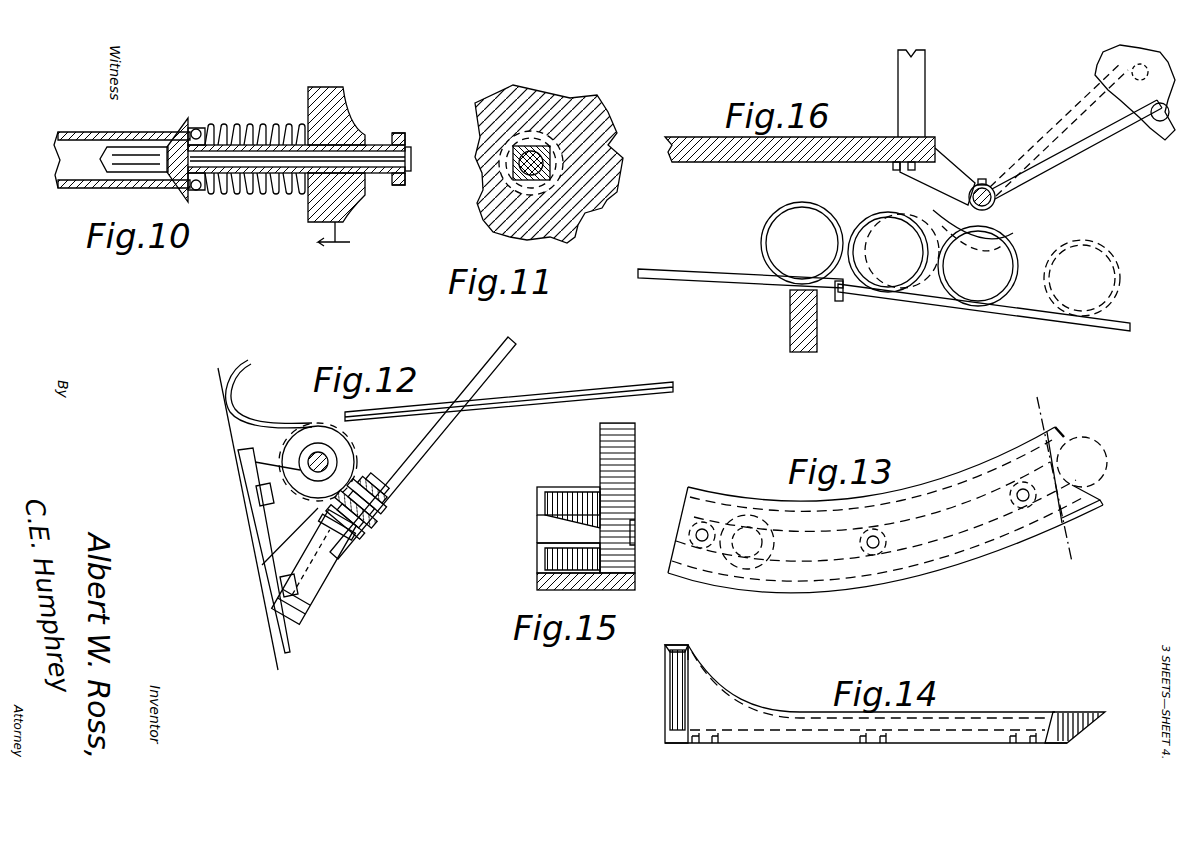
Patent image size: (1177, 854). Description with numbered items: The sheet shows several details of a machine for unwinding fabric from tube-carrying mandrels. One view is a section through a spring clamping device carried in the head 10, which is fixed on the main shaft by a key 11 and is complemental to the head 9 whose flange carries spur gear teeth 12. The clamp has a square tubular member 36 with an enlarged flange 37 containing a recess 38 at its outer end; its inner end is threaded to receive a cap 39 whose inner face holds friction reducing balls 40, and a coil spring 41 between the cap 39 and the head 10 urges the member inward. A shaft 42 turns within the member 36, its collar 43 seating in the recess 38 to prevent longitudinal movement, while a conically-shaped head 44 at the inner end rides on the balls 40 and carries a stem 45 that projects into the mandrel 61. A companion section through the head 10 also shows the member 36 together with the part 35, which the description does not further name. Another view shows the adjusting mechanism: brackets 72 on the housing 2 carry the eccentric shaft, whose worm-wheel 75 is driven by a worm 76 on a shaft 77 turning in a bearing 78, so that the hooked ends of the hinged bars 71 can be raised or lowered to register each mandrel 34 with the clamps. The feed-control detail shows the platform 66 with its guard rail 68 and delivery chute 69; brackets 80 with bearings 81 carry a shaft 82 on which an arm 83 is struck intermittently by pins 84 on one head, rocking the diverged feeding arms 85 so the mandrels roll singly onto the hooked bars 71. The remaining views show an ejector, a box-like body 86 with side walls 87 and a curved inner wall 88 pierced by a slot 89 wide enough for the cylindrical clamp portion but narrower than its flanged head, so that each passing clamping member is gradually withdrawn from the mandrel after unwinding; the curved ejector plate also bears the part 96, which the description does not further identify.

In FIG. 12, the upright housing 2 is at (223, 446).
In FIG. 16, the head 9 is at (1145, 68).
In FIG. 10, the head 10 is at (345, 96).
In FIG. 11, the head 10 is at (586, 104).
In FIG. 10, the key 11 is at (334, 245).
In FIG. 16, the spur gear teeth 12 is at (1094, 62).
In FIG. 16, the mandrel 34 is at (802, 233).
In FIG. 11, the core 35 is at (540, 178).
In FIG. 10, the square tubular member 36 is at (378, 182).
In FIG. 11, the square tubular member 36 is at (552, 176).
In FIG. 10, the enlarged flange 37 is at (405, 136).
In FIG. 10, the recess 38 is at (411, 150).
In FIG. 10, the cap 39 is at (212, 130).
In FIG. 10, the friction reducing balls 40 is at (190, 128).
In FIG. 10, the coil spring 41 is at (266, 192).
In FIG. 10, the shaft 42 is at (398, 188).
In FIG. 11, the shaft 42 is at (552, 156).
In FIG. 10, the collar 43 is at (406, 176).
In FIG. 10, the conically-shaped head 44 is at (182, 126).
In FIG. 10, the stem 45 is at (106, 159).
In FIG. 10, the mandrel 61 is at (100, 132).
In FIG. 16, the platform 66 is at (841, 138).
In FIG. 16, the guard rail 68 is at (925, 103).
In FIG. 16, the delivery chute 69 is at (740, 301).
In FIG. 16, the hinged bar 71 is at (960, 318).
In FIG. 12, the hinged bar 71 is at (509, 393).
In FIG. 12, the bracket 72 is at (278, 550).
In FIG. 12, the worm-wheel 75 is at (355, 452).
In FIG. 12, the worm 76 is at (384, 506).
In FIG. 12, the shaft 77 is at (506, 352).
In FIG. 12, the bearing 78 is at (340, 566).
In FIG. 16, the bracket 80 is at (952, 175).
In FIG. 16, the bearing 81 is at (1005, 216).
In FIG. 16, the shaft 82 is at (987, 183).
In FIG. 16, the arm 83 is at (1066, 150).
In FIG. 16, the pin 84 is at (1153, 120).
In FIG. 16, the feeding arm 85 is at (1020, 252).
In FIG. 15, the body portion 86 is at (637, 500).
In FIG. 14, the body portion 86 is at (676, 743).
In FIG. 15, the side wall 87 is at (586, 495).
In FIG. 14, the side wall 87 is at (667, 700).
In FIG. 15, the curved inner wall 88 is at (540, 555).
In FIG. 14, the curved inner wall 88 is at (674, 642).
In FIG. 15, the slot 89 is at (537, 531).
In FIG. 14, the slot 89 is at (690, 648).
In FIG. 13, the curved plate 96 is at (921, 500).